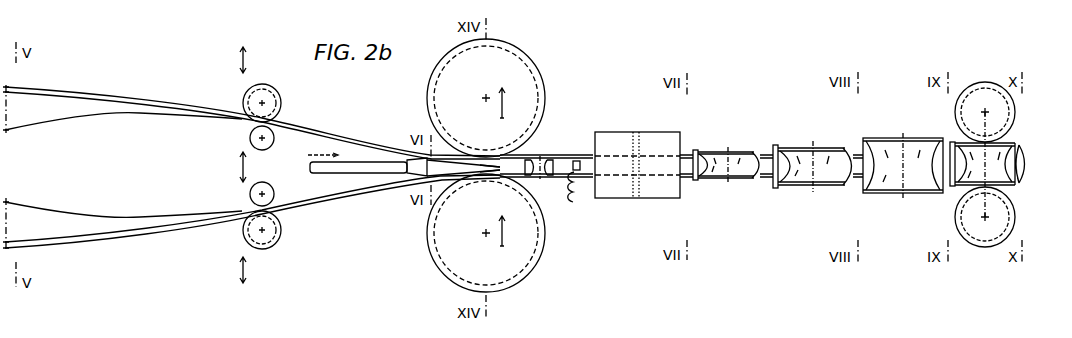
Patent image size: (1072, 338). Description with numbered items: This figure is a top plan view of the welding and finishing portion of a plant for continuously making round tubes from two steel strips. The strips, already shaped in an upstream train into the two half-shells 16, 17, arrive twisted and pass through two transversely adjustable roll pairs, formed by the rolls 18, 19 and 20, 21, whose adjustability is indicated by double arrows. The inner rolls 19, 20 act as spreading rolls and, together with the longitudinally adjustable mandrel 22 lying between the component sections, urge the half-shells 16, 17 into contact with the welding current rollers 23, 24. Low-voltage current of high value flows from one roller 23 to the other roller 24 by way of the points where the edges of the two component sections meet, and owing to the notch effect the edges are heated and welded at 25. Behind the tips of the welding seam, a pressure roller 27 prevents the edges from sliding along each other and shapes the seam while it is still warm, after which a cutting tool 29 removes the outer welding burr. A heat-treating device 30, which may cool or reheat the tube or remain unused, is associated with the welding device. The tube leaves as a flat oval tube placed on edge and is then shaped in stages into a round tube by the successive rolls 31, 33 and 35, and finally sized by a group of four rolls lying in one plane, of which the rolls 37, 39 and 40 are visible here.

The half-shell 16 is at (37, 210).
The half-shell 17 is at (33, 122).
The roll 18 is at (277, 236).
The spreading roll 19 is at (250, 194).
The spreading roll 20 is at (250, 138).
The roll 21 is at (277, 99).
The mandrel 22 is at (407, 175).
The welding current roller 23 is at (511, 64).
The welding current roller 24 is at (519, 266).
The welding point 25 is at (500, 162).
The pressure roller 27 is at (542, 160).
The cutting tool 29 is at (576, 160).
The heat-treating device 30 is at (624, 192).
The roll 31 is at (708, 152).
The roll 33 is at (791, 150).
The roll 35 is at (877, 140).
The sizing roll 37 is at (1022, 156).
The sizing roll 39 is at (956, 218).
The sizing roll 40 is at (957, 114).